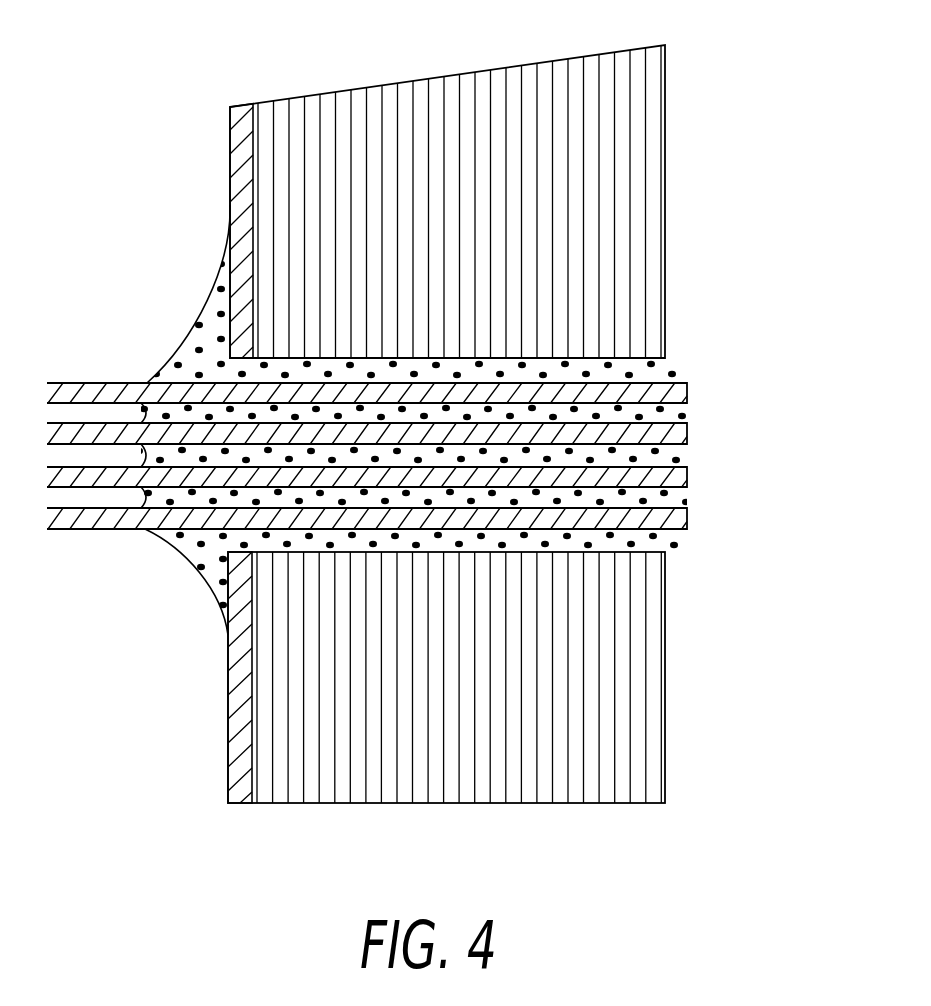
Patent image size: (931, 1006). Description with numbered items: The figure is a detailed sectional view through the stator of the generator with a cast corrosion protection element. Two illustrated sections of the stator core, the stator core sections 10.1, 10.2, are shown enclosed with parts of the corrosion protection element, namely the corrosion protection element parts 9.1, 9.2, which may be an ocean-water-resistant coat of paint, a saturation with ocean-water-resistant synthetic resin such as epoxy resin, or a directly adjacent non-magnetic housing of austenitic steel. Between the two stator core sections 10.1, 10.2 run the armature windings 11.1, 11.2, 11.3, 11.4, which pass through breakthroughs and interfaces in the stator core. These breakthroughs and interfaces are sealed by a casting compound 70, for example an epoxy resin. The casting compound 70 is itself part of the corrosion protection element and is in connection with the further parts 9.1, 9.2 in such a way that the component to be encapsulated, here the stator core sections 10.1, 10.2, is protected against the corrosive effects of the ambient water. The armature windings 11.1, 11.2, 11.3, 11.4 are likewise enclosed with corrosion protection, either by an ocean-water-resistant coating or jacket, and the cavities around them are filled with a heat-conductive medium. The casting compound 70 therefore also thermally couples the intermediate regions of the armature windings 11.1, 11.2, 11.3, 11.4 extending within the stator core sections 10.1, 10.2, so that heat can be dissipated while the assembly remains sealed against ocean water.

The corrosion protection element part 9.1 is at (240, 134).
The corrosion protection element part 9.2 is at (234, 775).
The stator core section 10.1 is at (638, 177).
The stator core section 10.2 is at (640, 687).
The armature winding 11.1 is at (682, 395).
The armature winding 11.2 is at (683, 436).
The armature winding 11.3 is at (683, 476).
The armature winding 11.4 is at (683, 518).
The casting compound 70 is at (200, 548).